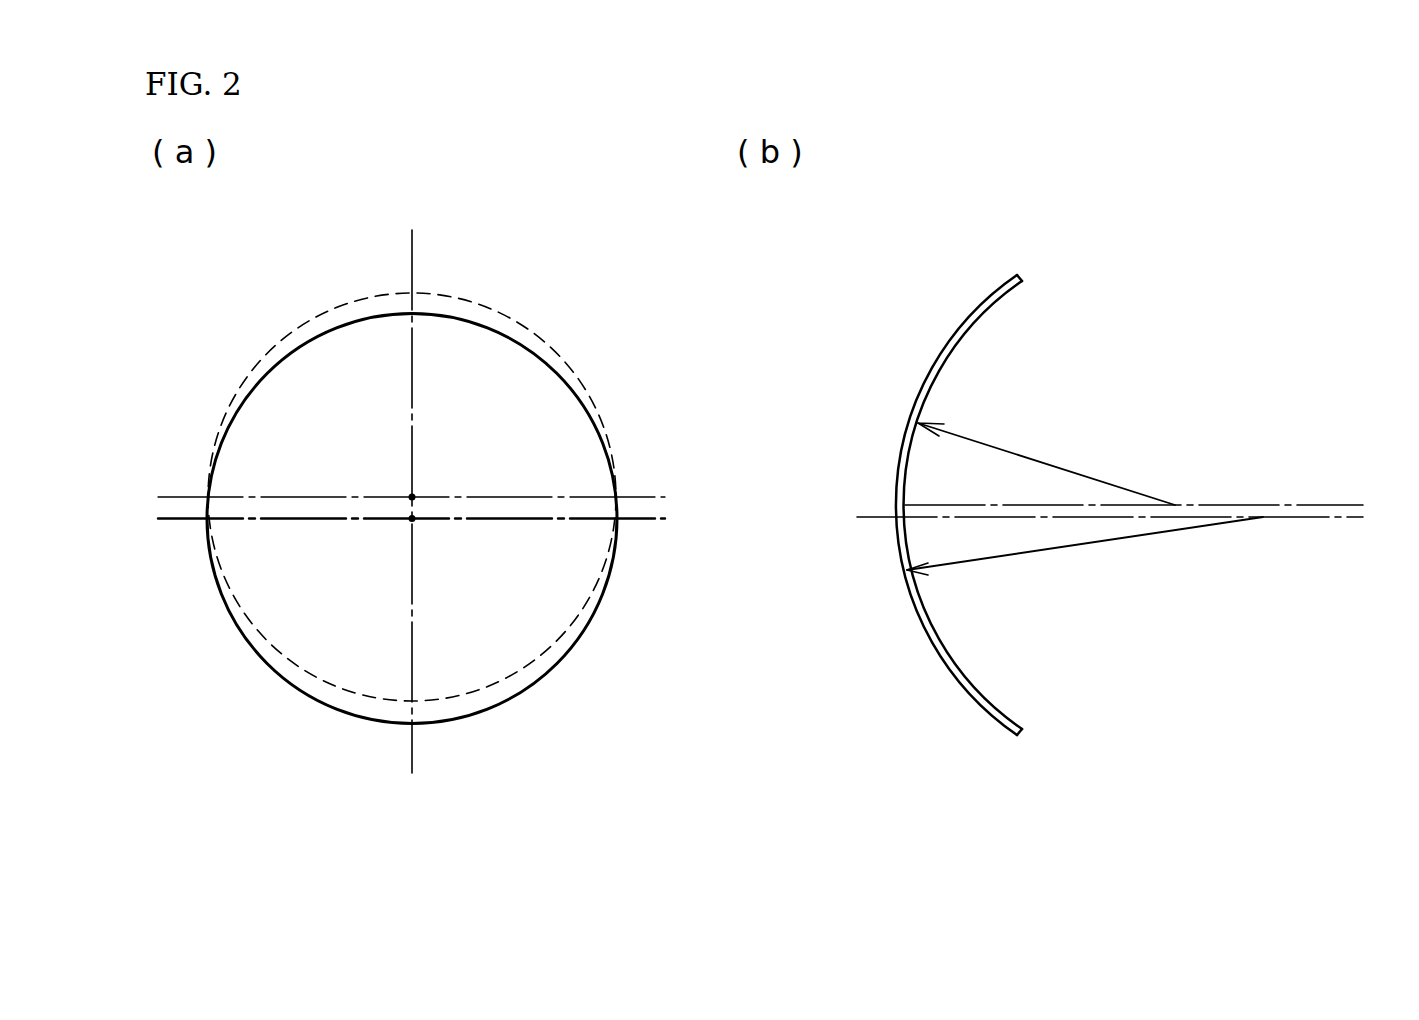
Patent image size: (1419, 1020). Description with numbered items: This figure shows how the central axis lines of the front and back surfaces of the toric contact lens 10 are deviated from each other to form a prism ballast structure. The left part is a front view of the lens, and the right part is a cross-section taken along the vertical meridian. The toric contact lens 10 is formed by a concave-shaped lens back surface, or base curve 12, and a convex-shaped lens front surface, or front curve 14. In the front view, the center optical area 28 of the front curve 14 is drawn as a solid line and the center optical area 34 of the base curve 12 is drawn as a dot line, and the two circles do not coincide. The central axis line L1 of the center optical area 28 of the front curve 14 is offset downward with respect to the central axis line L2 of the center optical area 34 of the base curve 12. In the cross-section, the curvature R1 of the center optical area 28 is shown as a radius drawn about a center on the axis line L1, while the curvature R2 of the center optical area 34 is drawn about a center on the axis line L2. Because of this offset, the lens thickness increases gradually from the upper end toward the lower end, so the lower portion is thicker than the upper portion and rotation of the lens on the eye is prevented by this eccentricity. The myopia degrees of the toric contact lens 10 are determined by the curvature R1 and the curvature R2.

The toric contact lens 10 is at (1001, 466).
The lens back surface (base curve) 12 is at (953, 352).
The lens front surface (front curve) 14 is at (920, 628).
The center optical area of the front curve 28 is at (370, 720).
The center optical area of the base curve 34 is at (385, 292).
The central axis line of the center optical area of the front curve L1 is at (412, 519).
The central axis line of the center optical area of the base curve L2 is at (412, 497).
The curvature of the center optical area of the front curve R1 is at (1048, 552).
The curvature of the center optical area of the base curve R2 is at (1020, 453).